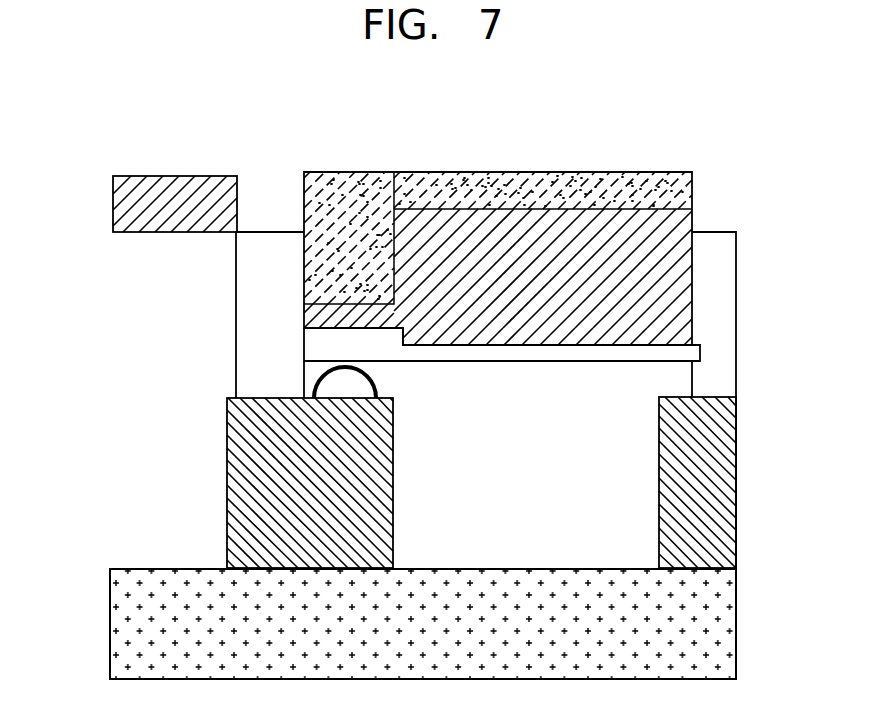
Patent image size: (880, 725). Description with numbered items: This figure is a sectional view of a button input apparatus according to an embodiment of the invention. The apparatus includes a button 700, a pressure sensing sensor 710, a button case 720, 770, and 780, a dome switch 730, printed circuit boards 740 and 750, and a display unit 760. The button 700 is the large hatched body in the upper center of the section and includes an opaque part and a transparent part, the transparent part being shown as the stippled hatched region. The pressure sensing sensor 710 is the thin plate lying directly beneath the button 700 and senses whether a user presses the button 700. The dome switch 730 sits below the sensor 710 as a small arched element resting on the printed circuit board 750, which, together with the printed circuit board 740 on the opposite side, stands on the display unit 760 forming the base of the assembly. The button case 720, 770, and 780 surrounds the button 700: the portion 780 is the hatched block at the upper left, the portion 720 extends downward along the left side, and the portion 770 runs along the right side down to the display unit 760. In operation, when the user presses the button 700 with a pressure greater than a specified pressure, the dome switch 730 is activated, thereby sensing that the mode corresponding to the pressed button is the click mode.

The button 700 is at (680, 268).
The pressure sensing sensor 710 is at (317, 334).
The button case 720 is at (248, 273).
The dome switch 730 is at (377, 383).
The printed circuit board 740 is at (723, 497).
The printed circuit board 750 is at (250, 494).
The display unit 760 is at (724, 623).
The button case 770 is at (723, 317).
The button case 780 is at (120, 203).